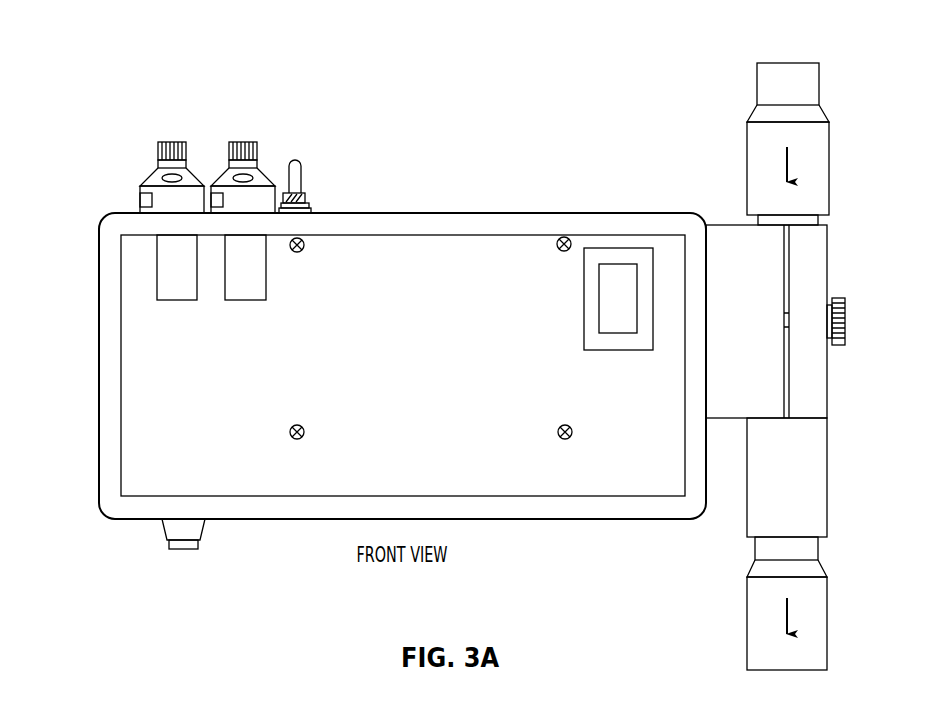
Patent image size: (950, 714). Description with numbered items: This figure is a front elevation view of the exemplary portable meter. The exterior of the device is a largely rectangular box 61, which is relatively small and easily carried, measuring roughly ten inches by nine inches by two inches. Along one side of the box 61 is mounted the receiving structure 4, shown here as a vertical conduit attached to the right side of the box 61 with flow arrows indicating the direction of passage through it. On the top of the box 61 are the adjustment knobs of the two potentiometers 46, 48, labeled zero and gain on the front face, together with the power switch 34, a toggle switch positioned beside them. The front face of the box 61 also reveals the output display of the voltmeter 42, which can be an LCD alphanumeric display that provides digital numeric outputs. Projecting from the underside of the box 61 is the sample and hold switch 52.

The receiving structure 4 is at (840, 173).
The power switch 34 is at (302, 150).
The voltmeter 42 is at (567, 308).
The potentiometer 46 is at (178, 142).
The potentiometer 48 is at (247, 142).
The sample and hold switch 52 is at (183, 561).
The rectangular box 61 is at (82, 393).